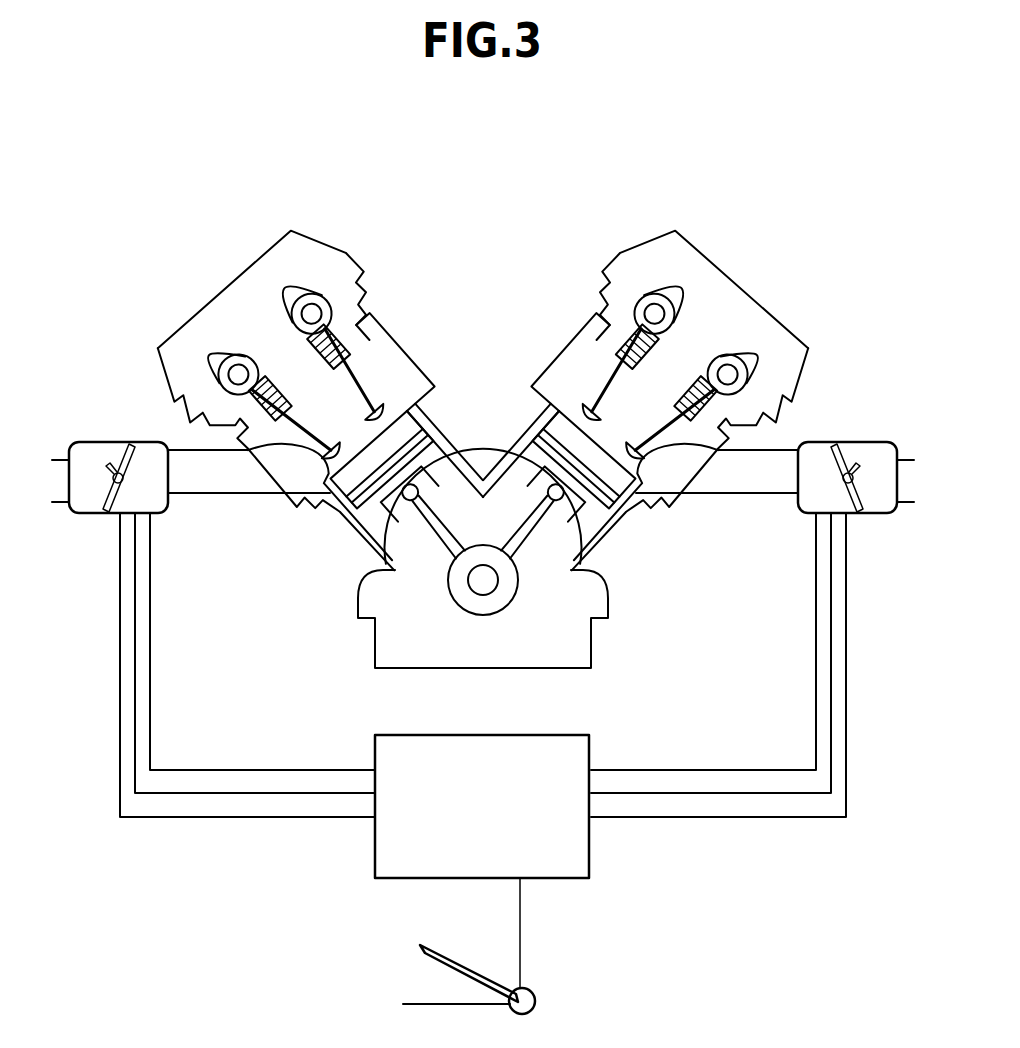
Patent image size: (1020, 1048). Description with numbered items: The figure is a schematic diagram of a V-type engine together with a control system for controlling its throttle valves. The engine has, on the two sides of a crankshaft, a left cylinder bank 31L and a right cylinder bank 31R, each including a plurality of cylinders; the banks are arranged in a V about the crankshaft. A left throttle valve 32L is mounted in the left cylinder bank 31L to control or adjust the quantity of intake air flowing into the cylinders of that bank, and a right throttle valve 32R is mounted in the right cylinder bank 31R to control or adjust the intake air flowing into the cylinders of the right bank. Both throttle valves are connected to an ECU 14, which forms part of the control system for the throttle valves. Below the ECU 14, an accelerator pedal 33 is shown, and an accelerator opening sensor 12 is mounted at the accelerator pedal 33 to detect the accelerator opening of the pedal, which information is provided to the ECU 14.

The left cylinder bank 31L is at (403, 285).
The right cylinder bank 31R is at (779, 285).
The left throttle valve 32L is at (112, 442).
The right throttle valve 32R is at (846, 442).
The ECU 14 is at (560, 735).
The accelerator pedal 33 is at (460, 960).
The accelerator opening sensor 12 is at (536, 1000).